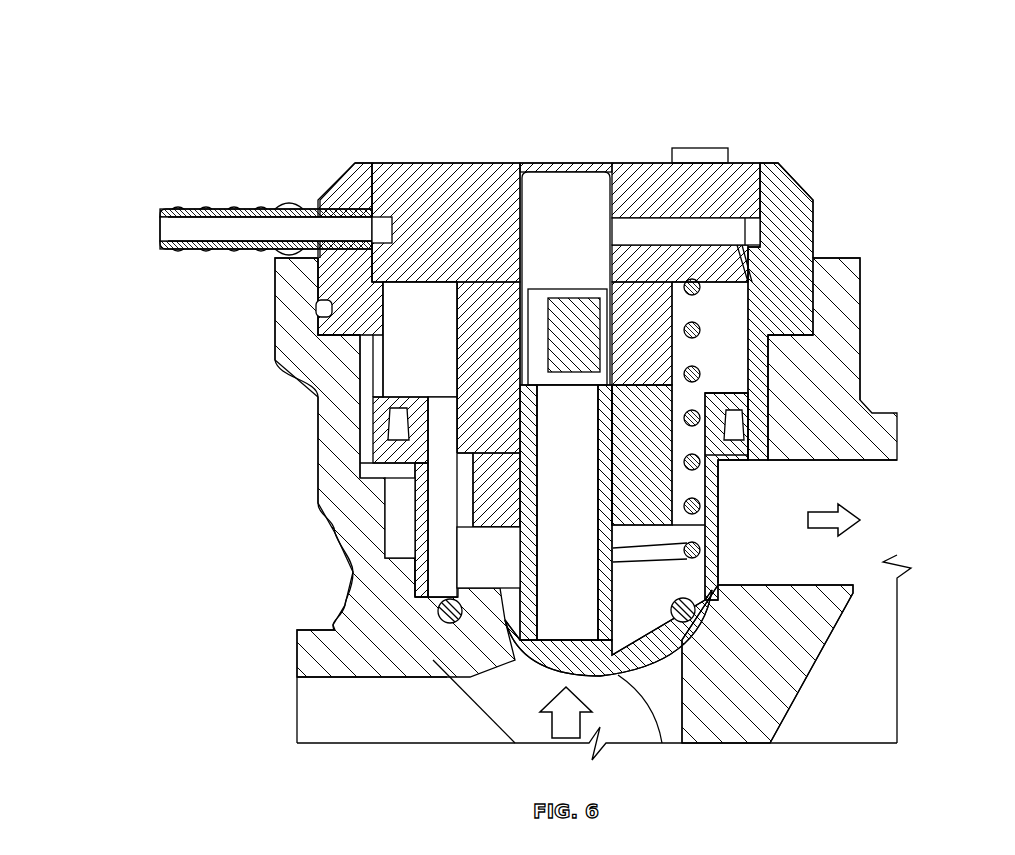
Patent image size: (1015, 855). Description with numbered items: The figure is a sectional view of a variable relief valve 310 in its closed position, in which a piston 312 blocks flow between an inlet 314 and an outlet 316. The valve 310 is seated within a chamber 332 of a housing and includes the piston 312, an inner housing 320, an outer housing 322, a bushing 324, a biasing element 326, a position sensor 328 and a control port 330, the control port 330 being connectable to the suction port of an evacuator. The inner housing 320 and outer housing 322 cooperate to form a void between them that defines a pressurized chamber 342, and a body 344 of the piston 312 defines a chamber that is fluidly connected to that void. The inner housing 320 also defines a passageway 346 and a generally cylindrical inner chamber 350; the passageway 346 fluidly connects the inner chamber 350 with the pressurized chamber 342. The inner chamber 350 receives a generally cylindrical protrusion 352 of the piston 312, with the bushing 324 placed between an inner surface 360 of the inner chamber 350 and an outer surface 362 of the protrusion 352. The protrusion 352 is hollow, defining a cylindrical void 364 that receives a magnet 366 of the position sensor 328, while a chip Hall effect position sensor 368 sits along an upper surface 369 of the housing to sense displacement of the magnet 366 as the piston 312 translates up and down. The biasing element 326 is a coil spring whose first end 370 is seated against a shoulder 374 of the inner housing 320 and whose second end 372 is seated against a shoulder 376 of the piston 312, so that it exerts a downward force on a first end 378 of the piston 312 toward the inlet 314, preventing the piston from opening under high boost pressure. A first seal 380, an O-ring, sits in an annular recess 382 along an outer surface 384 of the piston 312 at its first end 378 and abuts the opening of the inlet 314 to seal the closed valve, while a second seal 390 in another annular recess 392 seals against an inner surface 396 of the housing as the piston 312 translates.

The variable relief valve 310 is at (899, 70).
The piston 312 is at (717, 492).
The inlet 314 is at (690, 720).
The outlet 316 is at (790, 465).
The inner housing 320 is at (790, 205).
The outer housing 322 is at (420, 178).
The bushing 324 is at (705, 395).
The biasing element 326 is at (735, 380).
The position sensor 328 is at (725, 95).
The control port 330 is at (300, 207).
The chamber 332 is at (326, 308).
The pressurized chamber 342 is at (403, 345).
The body 344 is at (608, 666).
The passageway 346 is at (710, 228).
The inner chamber 350 is at (555, 200).
The protrusion 352 is at (400, 482).
The inner surface 360 is at (620, 455).
The outer surface 362 is at (630, 480).
The void 364 is at (566, 464).
The magnet 366 is at (618, 200).
The Hall effect position sensor 368 is at (692, 148).
The upper surface 369 is at (398, 163).
The first end 370 is at (725, 295).
The second end 372 is at (696, 560).
The shoulder 374 is at (757, 253).
The shoulder 376 is at (697, 597).
The first end 378 is at (367, 600).
The first seal 380 is at (427, 668).
The annular recess 382 is at (457, 653).
The outer surface 384 is at (700, 640).
The second seal 390 is at (738, 425).
The annular recess 392 is at (740, 445).
The inner surface 396 is at (737, 275).